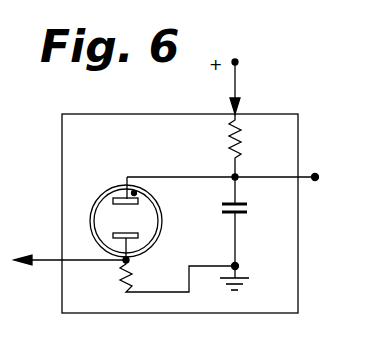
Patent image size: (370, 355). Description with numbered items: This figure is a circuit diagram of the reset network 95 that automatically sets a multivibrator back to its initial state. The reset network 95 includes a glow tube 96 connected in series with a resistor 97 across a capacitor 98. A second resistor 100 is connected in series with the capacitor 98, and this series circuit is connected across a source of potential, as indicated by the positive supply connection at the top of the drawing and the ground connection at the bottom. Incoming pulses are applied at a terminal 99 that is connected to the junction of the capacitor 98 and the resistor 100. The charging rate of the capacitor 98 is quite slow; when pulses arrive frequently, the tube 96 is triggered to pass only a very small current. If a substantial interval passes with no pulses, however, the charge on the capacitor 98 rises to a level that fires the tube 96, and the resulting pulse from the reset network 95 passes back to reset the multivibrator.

The reset network 95 is at (305, 135).
The glow tube 96 is at (104, 190).
The resistor 97 is at (133, 274).
The capacitor 98 is at (247, 207).
The terminal 99 is at (315, 177).
The resistor 100 is at (241, 154).